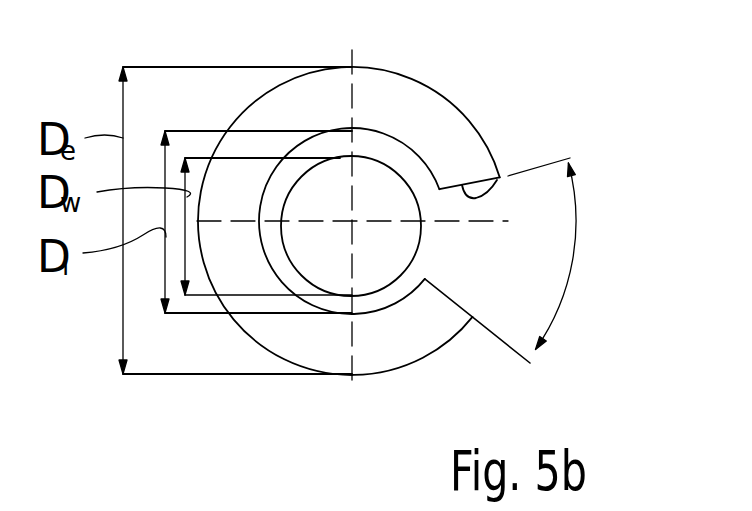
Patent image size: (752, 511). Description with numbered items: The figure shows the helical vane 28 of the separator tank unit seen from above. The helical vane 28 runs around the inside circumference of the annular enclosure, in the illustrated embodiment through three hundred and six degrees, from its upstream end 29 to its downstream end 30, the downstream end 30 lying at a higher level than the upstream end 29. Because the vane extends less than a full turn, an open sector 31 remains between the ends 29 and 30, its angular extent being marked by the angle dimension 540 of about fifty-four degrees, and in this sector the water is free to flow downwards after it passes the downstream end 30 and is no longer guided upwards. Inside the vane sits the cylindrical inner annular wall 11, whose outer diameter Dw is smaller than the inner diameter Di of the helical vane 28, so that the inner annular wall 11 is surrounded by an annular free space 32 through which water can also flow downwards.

The inner annular wall 11 is at (292, 184).
The helical vane 28 is at (415, 91).
The upstream end 29 is at (448, 292).
The downstream end 30 is at (498, 177).
The open sector 31 is at (462, 250).
The annular free space 32 is at (408, 163).
The gap angle (54 degrees) 540 is at (578, 252).